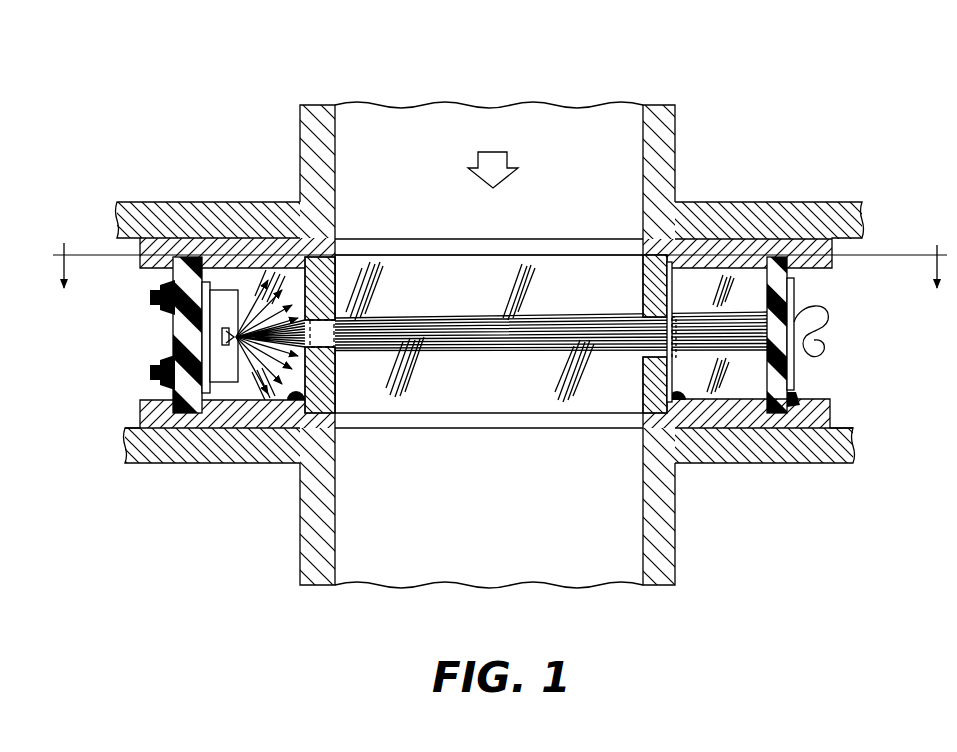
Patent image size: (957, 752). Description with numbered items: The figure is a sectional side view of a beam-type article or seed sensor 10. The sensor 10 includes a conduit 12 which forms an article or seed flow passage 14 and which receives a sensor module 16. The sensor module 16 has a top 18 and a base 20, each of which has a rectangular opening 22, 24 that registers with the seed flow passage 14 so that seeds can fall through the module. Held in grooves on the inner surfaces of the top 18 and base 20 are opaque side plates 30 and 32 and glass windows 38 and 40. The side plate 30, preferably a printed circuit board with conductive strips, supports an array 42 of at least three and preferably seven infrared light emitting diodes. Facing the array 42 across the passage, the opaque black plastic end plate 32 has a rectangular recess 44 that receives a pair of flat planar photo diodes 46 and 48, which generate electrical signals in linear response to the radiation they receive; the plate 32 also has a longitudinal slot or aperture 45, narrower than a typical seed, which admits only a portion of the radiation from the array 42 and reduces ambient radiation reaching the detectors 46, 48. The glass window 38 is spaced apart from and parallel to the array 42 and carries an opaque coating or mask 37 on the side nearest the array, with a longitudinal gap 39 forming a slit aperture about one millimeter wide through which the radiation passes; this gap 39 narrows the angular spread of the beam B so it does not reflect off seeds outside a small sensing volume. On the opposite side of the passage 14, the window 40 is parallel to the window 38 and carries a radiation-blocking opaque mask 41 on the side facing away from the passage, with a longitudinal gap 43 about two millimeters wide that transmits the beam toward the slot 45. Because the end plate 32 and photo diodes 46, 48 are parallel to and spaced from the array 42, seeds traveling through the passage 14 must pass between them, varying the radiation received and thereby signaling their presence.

The article or seed sensor 10 is at (139, 70).
The conduit 12 is at (672, 123).
The article or seed flow passage 14 is at (590, 105).
The sensor module 16 is at (157, 344).
The top 18 is at (278, 242).
The base 20 is at (290, 430).
The rectangular opening 22 is at (465, 241).
The rectangular opening 24 is at (488, 428).
The opaque side plate 30 is at (180, 410).
The opaque end plate 32 is at (783, 257).
The opaque coating or mask 37 is at (299, 283).
The glass window 38 is at (346, 406).
The longitudinal gap 39 is at (342, 323).
The glass window 40 is at (637, 272).
The opaque mask 41 is at (672, 325).
The array of radiation generators 42 is at (226, 276).
The longitudinal gap 43 is at (673, 327).
The rectangular recess 44 is at (797, 393).
The longitudinal slot or aperture 45 is at (753, 327).
The photo diode 46 is at (797, 295).
The photo diode 48 is at (797, 295).
The beam B is at (511, 358).